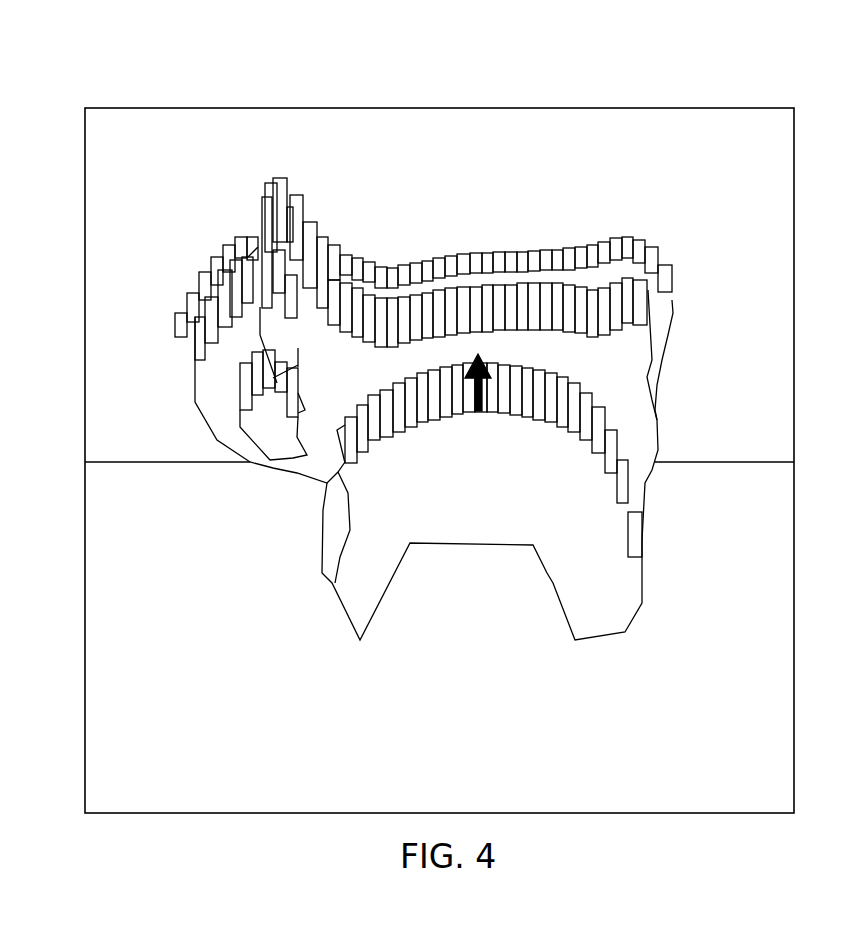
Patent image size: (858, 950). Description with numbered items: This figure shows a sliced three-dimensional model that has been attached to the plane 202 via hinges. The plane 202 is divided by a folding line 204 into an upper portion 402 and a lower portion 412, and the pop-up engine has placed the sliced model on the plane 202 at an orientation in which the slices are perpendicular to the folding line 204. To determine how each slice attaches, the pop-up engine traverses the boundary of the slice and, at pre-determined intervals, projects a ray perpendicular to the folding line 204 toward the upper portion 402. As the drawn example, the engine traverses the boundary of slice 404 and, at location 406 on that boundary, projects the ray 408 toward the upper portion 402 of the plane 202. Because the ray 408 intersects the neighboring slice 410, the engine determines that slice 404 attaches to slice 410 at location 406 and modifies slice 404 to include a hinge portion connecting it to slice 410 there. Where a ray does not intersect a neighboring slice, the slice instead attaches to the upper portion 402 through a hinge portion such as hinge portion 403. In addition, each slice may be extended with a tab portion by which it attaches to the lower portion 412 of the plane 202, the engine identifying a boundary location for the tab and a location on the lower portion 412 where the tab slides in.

The plane 202 is at (442, 108).
The folding line 204 is at (763, 462).
The upper portion 402 is at (752, 207).
The hinge portion 403 is at (632, 530).
The slice 404 is at (627, 590).
The location 406 is at (480, 412).
The ray 408 is at (477, 380).
The neighboring slice 410 is at (213, 397).
The lower portion 412 is at (767, 687).